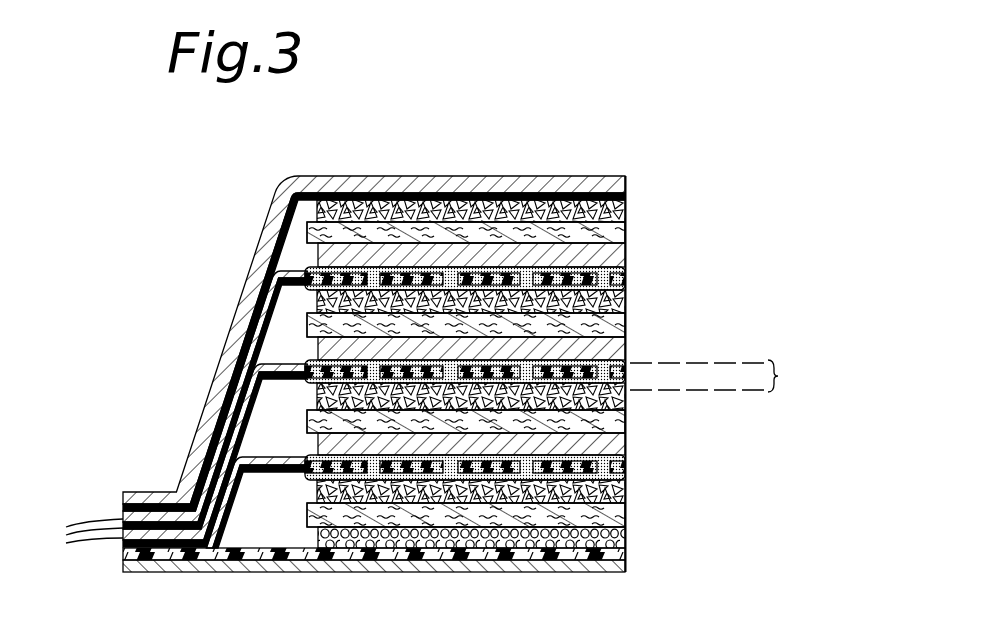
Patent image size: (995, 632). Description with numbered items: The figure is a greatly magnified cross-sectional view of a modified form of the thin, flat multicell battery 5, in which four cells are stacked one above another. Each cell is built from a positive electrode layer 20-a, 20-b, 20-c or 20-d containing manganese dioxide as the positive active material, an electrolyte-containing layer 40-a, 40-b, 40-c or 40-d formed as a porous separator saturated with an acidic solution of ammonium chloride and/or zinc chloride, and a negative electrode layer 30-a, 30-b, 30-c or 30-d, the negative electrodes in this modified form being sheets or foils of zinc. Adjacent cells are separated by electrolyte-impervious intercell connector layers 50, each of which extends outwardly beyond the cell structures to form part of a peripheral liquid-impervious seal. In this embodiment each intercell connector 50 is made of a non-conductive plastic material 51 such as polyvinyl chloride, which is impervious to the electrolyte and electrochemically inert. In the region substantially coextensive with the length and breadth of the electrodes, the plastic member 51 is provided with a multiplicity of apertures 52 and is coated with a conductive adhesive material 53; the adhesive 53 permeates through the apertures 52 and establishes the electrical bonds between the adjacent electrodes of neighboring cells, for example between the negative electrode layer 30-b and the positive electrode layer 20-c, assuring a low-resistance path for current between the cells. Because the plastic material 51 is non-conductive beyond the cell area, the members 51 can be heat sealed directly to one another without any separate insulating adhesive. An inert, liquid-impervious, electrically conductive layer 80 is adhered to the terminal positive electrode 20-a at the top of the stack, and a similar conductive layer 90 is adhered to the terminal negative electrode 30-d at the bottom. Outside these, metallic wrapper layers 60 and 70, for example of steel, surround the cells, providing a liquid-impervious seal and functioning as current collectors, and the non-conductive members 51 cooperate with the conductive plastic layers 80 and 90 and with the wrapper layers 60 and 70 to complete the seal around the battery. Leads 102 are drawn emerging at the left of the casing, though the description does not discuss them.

The multicell battery 5 is at (361, 169).
The positive electrode layer 20-a is at (628, 210).
The positive electrode layer 20-b is at (628, 305).
The positive electrode layer 20-c is at (628, 398).
The positive electrode layer 20-d is at (628, 496).
The negative electrode layer 30-a is at (628, 255).
The negative electrode layer 30-b is at (628, 347).
The negative electrode layer 30-c is at (628, 445).
The negative electrode layer 30-d is at (628, 538).
The electrolyte-containing layer 40-a is at (628, 233).
The electrolyte-containing layer 40-b is at (628, 327).
The electrolyte-containing layer 40-c is at (628, 421).
The electrolyte-containing layer 40-d is at (628, 516).
The intercell connector layer 50 is at (720, 377).
The non-conductive plastic material 51 is at (297, 263).
The apertures 52 is at (531, 276).
The conductive adhesive material 53 is at (628, 272).
The wrapper layer 60 is at (627, 194).
The wrapper layer 70 is at (627, 573).
The conductive layer 80 is at (628, 186).
The conductive layer 90 is at (628, 556).
The lead wires 102 is at (73, 536).